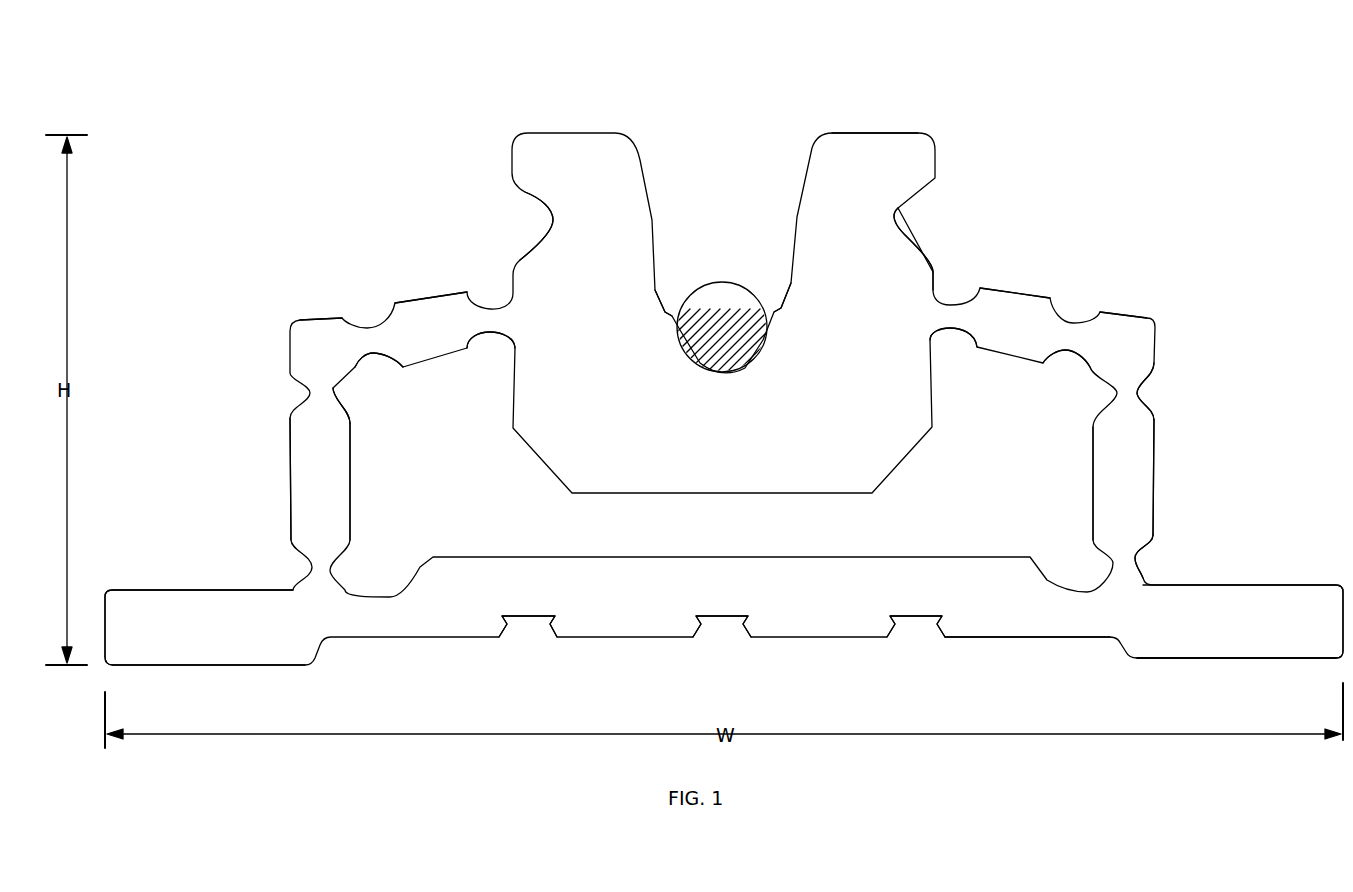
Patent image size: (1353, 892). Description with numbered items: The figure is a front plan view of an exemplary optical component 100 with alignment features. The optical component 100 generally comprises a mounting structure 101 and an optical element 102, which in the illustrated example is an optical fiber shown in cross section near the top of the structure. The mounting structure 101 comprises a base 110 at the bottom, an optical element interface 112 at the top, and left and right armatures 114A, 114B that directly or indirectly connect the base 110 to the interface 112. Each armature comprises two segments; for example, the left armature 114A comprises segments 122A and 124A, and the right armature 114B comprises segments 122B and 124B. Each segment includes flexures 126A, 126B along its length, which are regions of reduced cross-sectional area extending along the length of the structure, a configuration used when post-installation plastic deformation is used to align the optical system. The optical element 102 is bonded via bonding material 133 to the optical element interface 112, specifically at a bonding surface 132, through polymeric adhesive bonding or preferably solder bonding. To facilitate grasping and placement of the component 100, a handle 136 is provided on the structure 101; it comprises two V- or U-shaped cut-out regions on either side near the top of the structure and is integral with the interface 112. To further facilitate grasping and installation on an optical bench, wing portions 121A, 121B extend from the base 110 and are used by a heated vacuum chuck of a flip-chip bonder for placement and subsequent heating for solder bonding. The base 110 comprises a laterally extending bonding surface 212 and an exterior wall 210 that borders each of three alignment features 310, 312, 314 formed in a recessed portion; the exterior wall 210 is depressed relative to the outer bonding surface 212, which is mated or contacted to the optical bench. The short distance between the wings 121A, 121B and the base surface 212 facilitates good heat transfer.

The optical component 100 is at (1079, 143).
The mounting structure 101 is at (862, 132).
The optical element 102 is at (718, 283).
The base 110 is at (1293, 585).
The optical element interface 112 is at (935, 272).
The left armature 114A is at (311, 318).
The right armature 114B is at (1155, 320).
The wing portion 121A is at (171, 590).
The wing portion 121B is at (1218, 585).
The armature segment 122A is at (432, 293).
The armature segment 122B is at (1033, 297).
The armature segment 124A is at (353, 498).
The armature segment 124B is at (1155, 442).
The flexure 126A is at (375, 355).
The flexure 126B is at (955, 330).
The bonding surface 132 is at (658, 290).
The bonding material 133 is at (773, 305).
The handle 136 is at (523, 200).
The exterior wall 210 is at (1031, 640).
The bonding surface 212 is at (1200, 660).
The alignment feature 310 is at (529, 620).
The alignment feature 312 is at (724, 620).
The alignment feature 314 is at (918, 620).